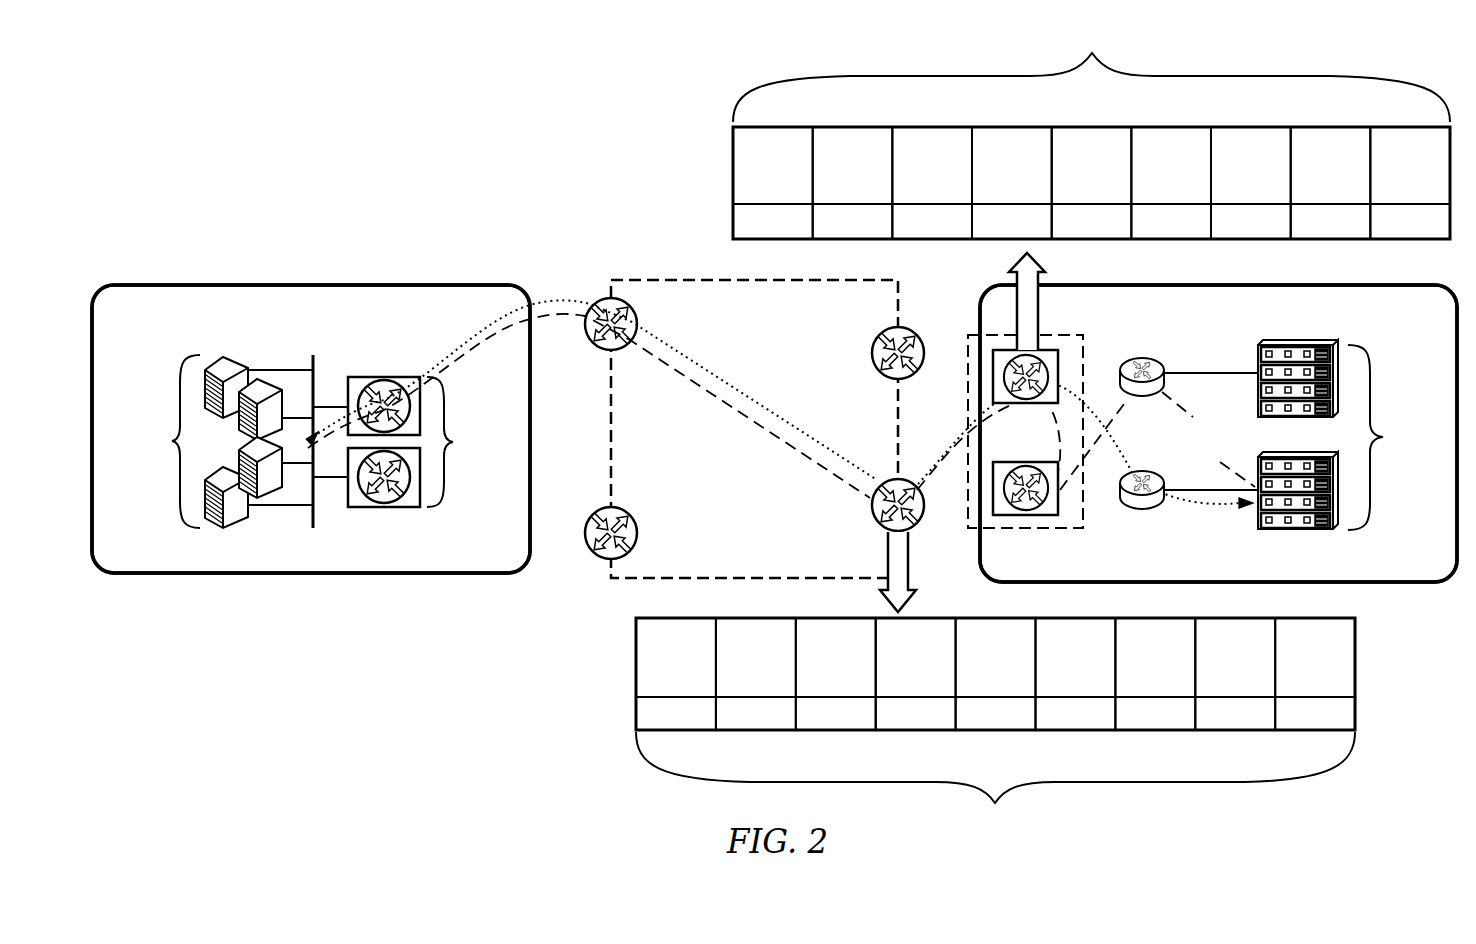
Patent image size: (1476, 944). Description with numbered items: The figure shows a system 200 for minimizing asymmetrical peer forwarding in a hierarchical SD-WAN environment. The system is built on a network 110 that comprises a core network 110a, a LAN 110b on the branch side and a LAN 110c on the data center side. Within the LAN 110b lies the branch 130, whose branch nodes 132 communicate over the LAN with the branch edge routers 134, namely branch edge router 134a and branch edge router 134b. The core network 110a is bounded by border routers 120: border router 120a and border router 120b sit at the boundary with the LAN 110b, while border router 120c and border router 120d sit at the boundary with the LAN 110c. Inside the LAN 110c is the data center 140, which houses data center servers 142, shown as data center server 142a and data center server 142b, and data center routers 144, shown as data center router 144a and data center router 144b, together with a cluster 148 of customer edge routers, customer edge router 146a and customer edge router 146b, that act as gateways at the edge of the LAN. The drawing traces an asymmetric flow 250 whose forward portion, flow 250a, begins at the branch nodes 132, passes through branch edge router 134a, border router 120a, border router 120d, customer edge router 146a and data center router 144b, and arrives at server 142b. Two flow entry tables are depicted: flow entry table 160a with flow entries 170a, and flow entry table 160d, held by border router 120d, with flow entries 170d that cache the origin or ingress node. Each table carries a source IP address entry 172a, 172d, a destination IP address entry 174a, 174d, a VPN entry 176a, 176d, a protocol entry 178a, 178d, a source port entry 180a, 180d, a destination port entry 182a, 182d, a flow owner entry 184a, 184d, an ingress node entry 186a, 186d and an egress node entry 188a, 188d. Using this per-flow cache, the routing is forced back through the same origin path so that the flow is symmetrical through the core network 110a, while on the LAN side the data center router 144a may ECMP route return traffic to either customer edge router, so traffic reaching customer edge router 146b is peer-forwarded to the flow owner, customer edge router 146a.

The system 200 is at (284, 52).
The network 110 is at (514, 208).
The core network 110a is at (840, 571).
The LAN 110b is at (205, 316).
The LAN 110c is at (1437, 318).
The border routers 120 is at (880, 340).
The border router 120a is at (594, 303).
The border router 120b is at (600, 559).
The border router 120c is at (910, 330).
The border router 120d is at (923, 528).
The branch 130 is at (361, 566).
The branch nodes 132 is at (210, 441).
The branch edge routers 134 is at (420, 429).
The branch edge router 134a is at (362, 377).
The branch edge router 134b is at (405, 507).
The data center 140 is at (1290, 573).
The data center servers 142 is at (1357, 450).
The data center server 142a is at (1290, 418).
The data center server 142b is at (1290, 530).
The data center routers 144 is at (1160, 382).
The data center router 144a is at (1152, 360).
The data center router 144b is at (1150, 505).
The customer edge router 146a is at (1060, 362).
The customer edge router 146b is at (1052, 517).
The cluster 148 is at (1058, 336).
The flow entry table 160a is at (710, 168).
The flow entry table 160d is at (612, 662).
The flow entries 170a is at (1091, 78).
The flow entries 170d is at (995, 779).
The source IP address entry 172a is at (794, 189).
The destination IP address entry 174a is at (874, 189).
The VPN entry 176a is at (911, 189).
The protocol entry 178a is at (1033, 189).
The source port entry 180a is at (1070, 189).
The destination port entry 182a is at (1150, 189).
The flow owner entry 184a is at (1272, 199).
The ingress node entry 186a is at (1352, 199).
The egress node entry 188a is at (1389, 199).
The source IP address entry 172d is at (655, 681).
The destination IP address entry 174d is at (777, 681).
The VPN entry 176d is at (857, 681).
The protocol entry 178d is at (937, 681).
The source port entry 180d is at (974, 681).
The destination port entry 182d is at (1054, 681).
The flow owner entry 184d is at (1134, 691).
The ingress node entry 186d is at (1214, 691).
The egress node entry 188d is at (1294, 691).
The asymmetric flow 250 is at (796, 449).
The flow 250a is at (662, 358).